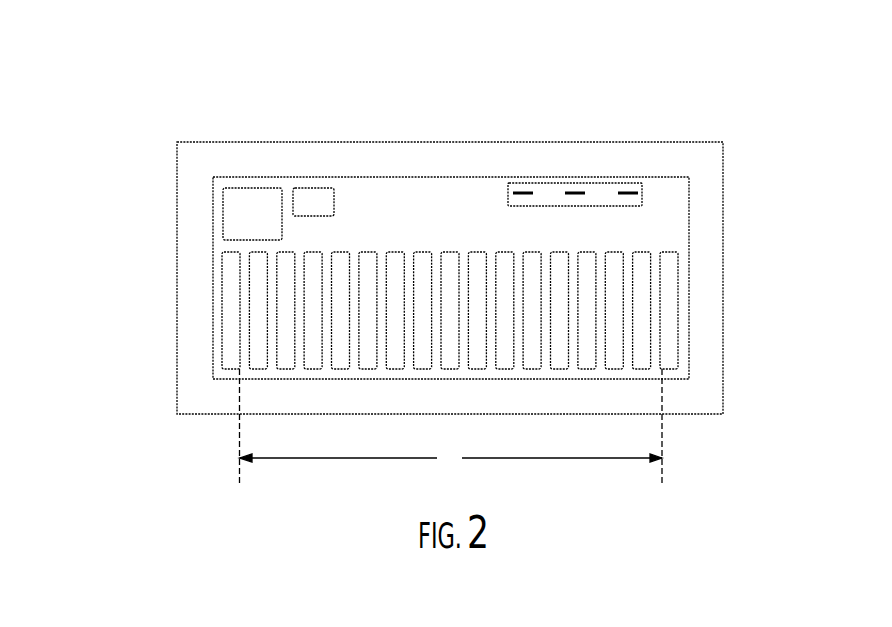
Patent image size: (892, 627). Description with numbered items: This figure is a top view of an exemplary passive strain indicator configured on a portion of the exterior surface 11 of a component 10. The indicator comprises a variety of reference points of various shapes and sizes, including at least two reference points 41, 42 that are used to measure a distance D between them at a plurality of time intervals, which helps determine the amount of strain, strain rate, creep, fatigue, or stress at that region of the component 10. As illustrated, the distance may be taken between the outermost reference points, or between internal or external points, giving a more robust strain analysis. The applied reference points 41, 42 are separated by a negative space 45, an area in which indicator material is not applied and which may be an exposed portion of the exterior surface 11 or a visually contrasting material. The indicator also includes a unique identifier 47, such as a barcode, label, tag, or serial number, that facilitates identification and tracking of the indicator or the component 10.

The component 10 is at (103, 173).
The exterior surface 11 is at (423, 158).
The unique identifier 47 is at (597, 182).
The negative space 45 is at (250, 277).
The first reference point 41 is at (213, 379).
The second reference point 42 is at (688, 370).